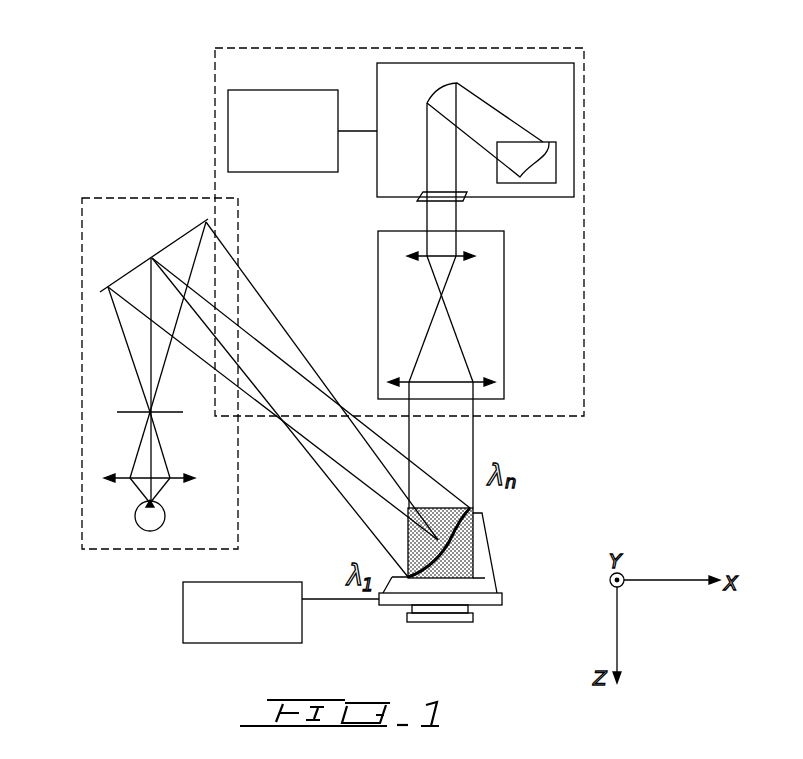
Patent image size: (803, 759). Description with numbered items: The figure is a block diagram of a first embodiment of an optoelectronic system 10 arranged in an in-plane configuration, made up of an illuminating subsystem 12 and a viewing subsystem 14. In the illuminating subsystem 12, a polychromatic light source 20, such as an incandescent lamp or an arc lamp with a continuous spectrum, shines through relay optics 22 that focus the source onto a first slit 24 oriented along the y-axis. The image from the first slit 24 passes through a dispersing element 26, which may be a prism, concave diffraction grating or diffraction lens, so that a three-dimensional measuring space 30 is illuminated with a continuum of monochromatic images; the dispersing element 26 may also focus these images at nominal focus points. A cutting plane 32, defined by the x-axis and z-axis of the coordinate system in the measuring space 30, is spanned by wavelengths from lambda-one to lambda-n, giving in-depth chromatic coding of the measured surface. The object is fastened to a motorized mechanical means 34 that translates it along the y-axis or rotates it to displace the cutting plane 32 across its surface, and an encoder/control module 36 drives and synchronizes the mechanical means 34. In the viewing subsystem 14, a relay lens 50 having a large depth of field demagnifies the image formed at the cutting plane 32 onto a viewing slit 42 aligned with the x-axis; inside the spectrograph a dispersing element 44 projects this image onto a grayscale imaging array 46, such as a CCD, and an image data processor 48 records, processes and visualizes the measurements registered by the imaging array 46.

The optoelectronic system 10 is at (148, 130).
The illuminating subsystem 12 is at (82, 345).
The viewing subsystem 14 is at (215, 58).
The polychromatic light source 20 is at (148, 527).
The relay optics 22 is at (127, 480).
The first slit 24 is at (130, 410).
The dispersing element 26 is at (130, 273).
The measuring space 30 is at (415, 537).
The cutting plane 32 is at (482, 500).
The motorized mechanical means 34 is at (490, 598).
The encoder/control module 36 is at (207, 622).
The viewing slit 42 is at (463, 200).
The dispersing element 44 is at (438, 83).
The grayscale imaging array 46 is at (550, 175).
The image data processor 48 is at (282, 107).
The relay lens 50 is at (487, 297).